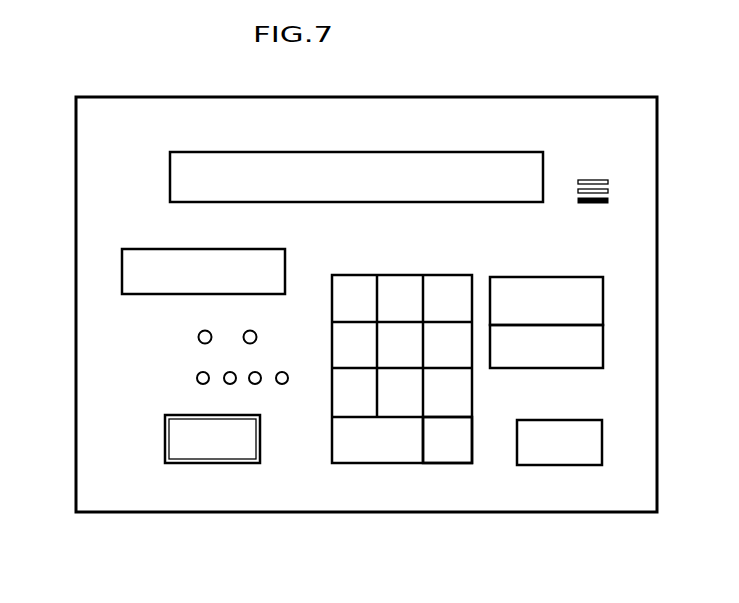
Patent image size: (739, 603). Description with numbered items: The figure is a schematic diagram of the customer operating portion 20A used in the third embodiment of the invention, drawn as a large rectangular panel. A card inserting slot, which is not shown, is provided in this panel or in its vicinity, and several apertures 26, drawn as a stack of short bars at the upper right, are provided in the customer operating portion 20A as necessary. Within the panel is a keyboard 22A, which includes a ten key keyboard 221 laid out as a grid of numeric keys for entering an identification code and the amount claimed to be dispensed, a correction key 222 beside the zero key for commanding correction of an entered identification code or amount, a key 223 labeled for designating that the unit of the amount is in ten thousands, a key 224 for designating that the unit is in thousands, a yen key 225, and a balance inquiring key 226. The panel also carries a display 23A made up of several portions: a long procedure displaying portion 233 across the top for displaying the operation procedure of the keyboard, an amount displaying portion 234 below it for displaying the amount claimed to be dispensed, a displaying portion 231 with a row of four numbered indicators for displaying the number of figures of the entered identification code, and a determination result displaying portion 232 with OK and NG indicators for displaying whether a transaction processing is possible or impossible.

The customer operating portion 20A is at (594, 92).
The keyboard 22A is at (477, 497).
The display 23A is at (124, 162).
The apertures 26 is at (607, 192).
The ten key keyboard 221 is at (414, 269).
The correction key 222 is at (465, 433).
The key 223 is at (605, 302).
The key 224 is at (603, 352).
The yen key 225 is at (602, 442).
The balance inquiring key 226 is at (260, 442).
The displaying portion 231 is at (293, 373).
The determination result displaying portion 232 is at (273, 331).
The procedure displaying portion 233 is at (493, 160).
The amount displaying portion 234 is at (283, 264).